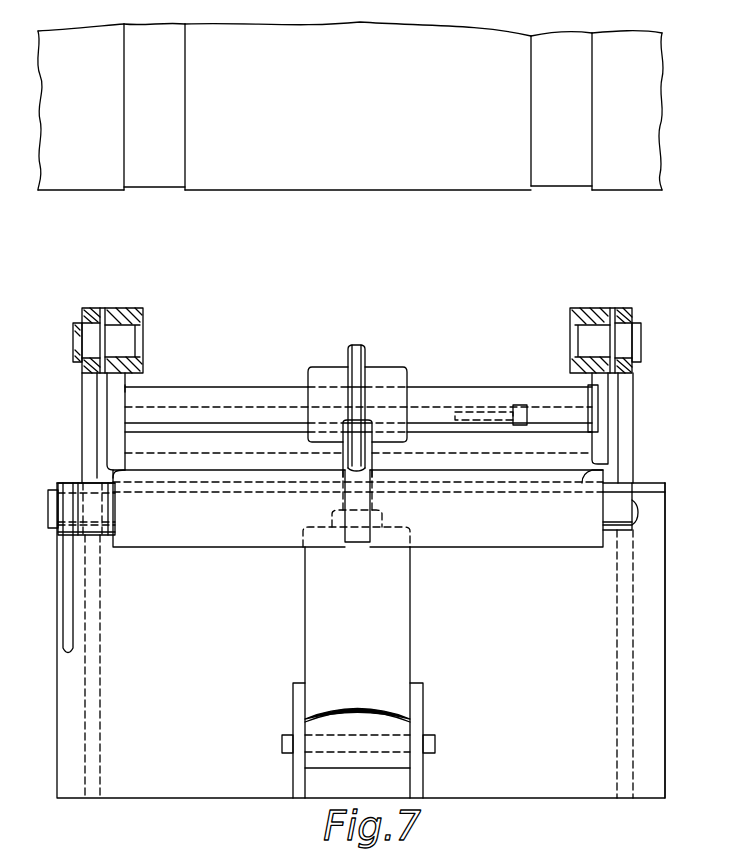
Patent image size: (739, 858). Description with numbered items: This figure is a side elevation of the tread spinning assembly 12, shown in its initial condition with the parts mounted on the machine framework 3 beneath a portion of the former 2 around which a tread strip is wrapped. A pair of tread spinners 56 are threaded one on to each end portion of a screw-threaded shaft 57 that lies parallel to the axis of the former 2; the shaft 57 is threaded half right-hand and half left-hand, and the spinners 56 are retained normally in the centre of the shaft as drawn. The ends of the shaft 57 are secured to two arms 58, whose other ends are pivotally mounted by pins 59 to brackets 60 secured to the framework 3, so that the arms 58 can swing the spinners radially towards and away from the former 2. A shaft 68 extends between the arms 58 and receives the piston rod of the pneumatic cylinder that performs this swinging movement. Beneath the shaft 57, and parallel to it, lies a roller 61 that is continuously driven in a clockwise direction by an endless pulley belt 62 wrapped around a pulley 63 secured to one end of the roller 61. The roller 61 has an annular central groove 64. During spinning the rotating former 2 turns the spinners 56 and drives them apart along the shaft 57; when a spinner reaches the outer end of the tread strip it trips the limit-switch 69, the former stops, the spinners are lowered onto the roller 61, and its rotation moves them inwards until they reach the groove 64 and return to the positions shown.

The former 2 is at (628, 172).
The framework 3 is at (652, 703).
The tread spinning assembly 12 is at (55, 707).
The tread spinners 56 is at (335, 368).
The screw-threaded shaft 57 is at (437, 387).
The arms 58 is at (110, 440).
The pins 59 is at (133, 336).
The brackets 60 is at (88, 390).
The roller 61 is at (515, 543).
The endless pulley belt 62 is at (68, 566).
The pulley 63 is at (56, 485).
The annular central groove 64 is at (357, 546).
The shaft 68 is at (582, 458).
The limit-switch 69 is at (530, 405).